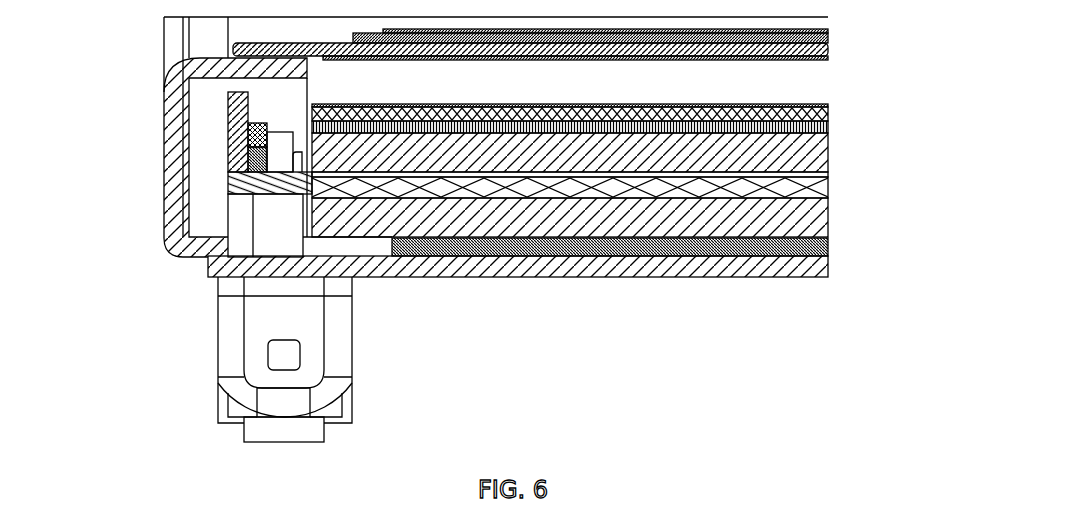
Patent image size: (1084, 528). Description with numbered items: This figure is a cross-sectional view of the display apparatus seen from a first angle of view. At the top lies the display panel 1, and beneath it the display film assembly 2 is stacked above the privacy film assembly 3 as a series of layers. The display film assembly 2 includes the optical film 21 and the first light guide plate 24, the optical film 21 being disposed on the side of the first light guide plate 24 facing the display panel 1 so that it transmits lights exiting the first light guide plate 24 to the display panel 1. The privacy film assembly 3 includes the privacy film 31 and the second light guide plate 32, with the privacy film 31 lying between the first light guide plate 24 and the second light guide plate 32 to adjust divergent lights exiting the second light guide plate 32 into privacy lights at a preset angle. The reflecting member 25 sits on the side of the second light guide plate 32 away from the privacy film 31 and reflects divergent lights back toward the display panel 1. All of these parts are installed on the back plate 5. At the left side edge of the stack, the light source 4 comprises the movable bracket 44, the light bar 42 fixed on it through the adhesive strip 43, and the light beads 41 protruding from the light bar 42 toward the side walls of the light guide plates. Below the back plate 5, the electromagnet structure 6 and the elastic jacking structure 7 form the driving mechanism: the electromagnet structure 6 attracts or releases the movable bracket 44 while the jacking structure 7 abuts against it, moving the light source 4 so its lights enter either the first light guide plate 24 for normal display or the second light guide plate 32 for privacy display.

The display panel 1 is at (828, 47).
The display film assembly 2 is at (633, 128).
The optical film 21 is at (820, 120).
The first light guide plate 24 is at (822, 158).
The reflecting member 25 is at (818, 265).
The privacy film assembly 3 is at (635, 207).
The privacy film 31 is at (818, 184).
The second light guide plate 32 is at (828, 217).
The light source 4 is at (177, 174).
The light beads 41 is at (275, 168).
The light bar 42 is at (252, 160).
The adhesive strip 43 is at (250, 137).
The movable bracket 44 is at (238, 117).
The back plate 5 is at (210, 257).
The electromagnet structure 6 is at (237, 348).
The elastic jacking structure 7 is at (229, 420).